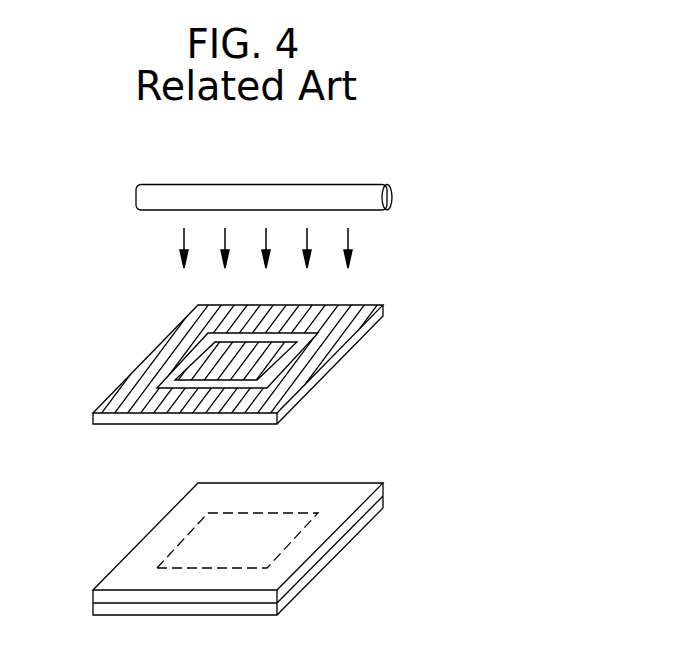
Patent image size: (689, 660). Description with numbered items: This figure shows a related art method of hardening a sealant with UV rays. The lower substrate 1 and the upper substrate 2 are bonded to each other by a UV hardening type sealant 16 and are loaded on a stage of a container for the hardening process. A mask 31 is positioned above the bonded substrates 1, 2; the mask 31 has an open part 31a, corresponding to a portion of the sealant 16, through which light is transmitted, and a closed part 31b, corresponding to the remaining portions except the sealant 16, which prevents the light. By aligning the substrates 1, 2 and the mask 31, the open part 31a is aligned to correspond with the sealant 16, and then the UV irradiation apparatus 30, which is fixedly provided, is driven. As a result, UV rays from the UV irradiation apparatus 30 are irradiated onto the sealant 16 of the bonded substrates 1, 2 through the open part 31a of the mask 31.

The lower substrate 1 is at (244, 526).
The upper substrate 2 is at (163, 537).
The sealant 16 is at (293, 512).
The UV irradiation apparatus 30 is at (397, 200).
The mask 31 is at (239, 341).
The open part 31a is at (173, 368).
The closed part 31b is at (360, 312).